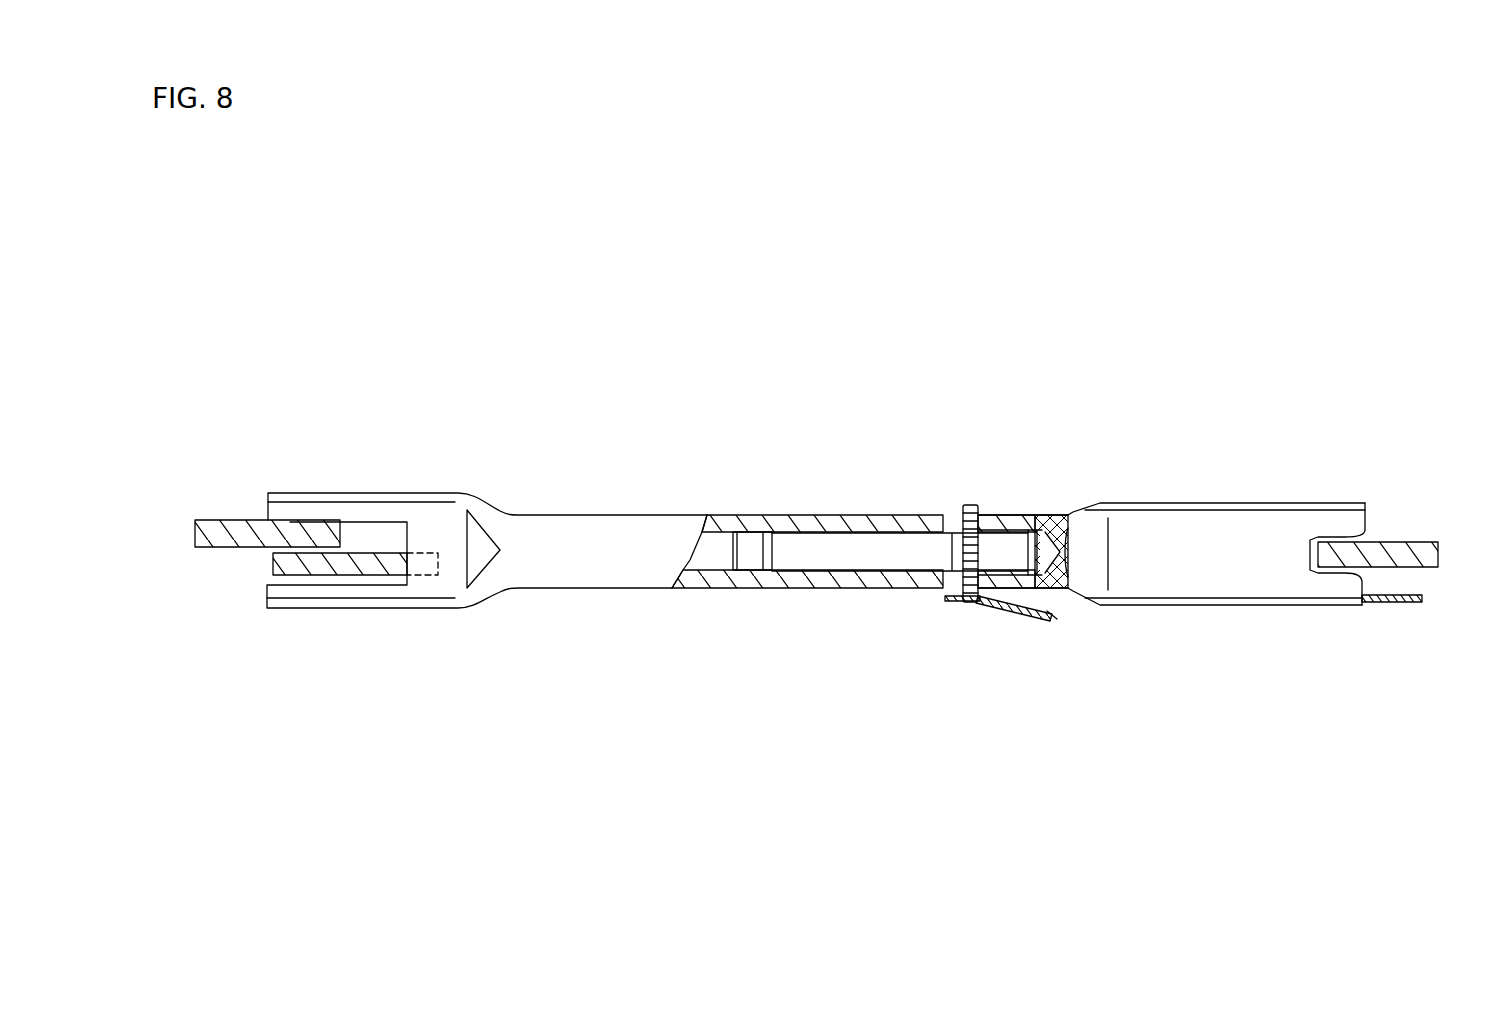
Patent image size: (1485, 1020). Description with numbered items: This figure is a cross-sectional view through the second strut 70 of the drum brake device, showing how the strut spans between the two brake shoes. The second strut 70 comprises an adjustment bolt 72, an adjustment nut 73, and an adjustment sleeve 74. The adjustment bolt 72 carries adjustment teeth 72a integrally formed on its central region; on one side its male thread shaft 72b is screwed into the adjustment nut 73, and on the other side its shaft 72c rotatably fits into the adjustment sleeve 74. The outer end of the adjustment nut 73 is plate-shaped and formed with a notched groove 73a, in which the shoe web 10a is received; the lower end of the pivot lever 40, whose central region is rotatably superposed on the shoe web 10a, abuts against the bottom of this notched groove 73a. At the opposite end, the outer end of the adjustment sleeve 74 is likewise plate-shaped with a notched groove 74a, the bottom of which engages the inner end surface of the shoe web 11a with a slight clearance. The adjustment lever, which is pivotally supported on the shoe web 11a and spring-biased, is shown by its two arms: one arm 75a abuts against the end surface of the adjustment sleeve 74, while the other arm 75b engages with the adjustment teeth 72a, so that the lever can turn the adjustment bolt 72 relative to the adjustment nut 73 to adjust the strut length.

The shoe web 10a is at (225, 520).
The shoe web 11a is at (1415, 547).
The pivot lever 40 is at (333, 572).
The second strut 70 is at (885, 525).
The adjustment bolt 72 is at (887, 540).
The adjustment teeth 72a is at (972, 505).
The male thread shaft 72b is at (810, 575).
The shaft 72c is at (1018, 530).
The adjustment nut 73 is at (487, 545).
The notched groove 73a is at (400, 522).
The adjustment sleeve 74 is at (1217, 550).
The notched groove 74a is at (1328, 547).
The arm of adjustment lever 75a is at (1398, 602).
The arm of adjustment lever 75b is at (950, 606).